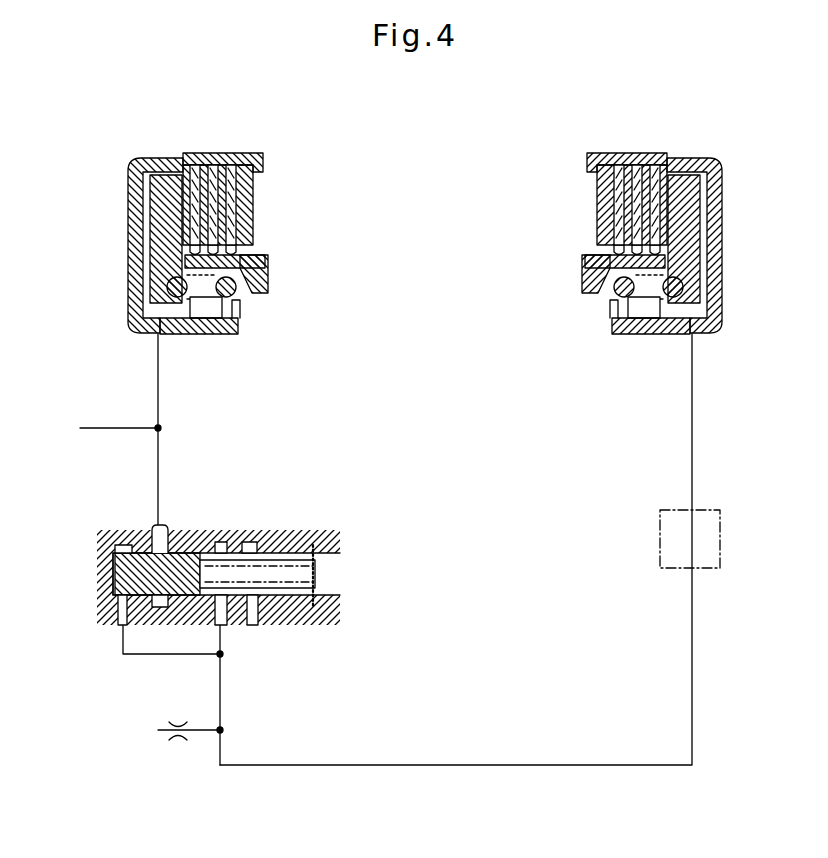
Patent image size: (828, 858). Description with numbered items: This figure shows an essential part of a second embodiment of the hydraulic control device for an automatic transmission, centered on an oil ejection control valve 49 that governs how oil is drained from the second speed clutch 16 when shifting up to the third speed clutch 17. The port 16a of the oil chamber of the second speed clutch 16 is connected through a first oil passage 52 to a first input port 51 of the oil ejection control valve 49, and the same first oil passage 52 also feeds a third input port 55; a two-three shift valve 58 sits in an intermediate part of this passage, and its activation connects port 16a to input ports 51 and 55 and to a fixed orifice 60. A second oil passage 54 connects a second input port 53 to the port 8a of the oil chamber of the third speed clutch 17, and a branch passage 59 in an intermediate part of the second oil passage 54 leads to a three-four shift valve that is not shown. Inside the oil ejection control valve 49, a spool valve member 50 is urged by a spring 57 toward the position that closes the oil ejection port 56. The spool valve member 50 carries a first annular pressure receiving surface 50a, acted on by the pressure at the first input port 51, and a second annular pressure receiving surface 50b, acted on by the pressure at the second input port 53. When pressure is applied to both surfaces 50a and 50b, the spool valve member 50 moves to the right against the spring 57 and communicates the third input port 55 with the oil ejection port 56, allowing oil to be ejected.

The second speed clutch 16 is at (560, 171).
The port 16a is at (688, 337).
The third speed clutch 17 is at (300, 169).
The caliper piston 8a is at (163, 336).
The oil ejection control valve 49 is at (349, 511).
The spool valve member 50 is at (238, 545).
The first annular pressure receiving surface 50a is at (101, 566).
The second annular pressure receiving surface 50b is at (172, 530).
The first input port 51 is at (116, 630).
The first oil passage 52 is at (693, 468).
The second input port 53 is at (155, 521).
The second oil passage 54 is at (159, 410).
The third input port 55 is at (226, 631).
The oil ejection port 56 is at (256, 630).
The spring 57 is at (305, 557).
The 2-3 shift valve 58 is at (668, 510).
The branch passage 59 is at (99, 427).
The fixed orifice 60 is at (179, 741).